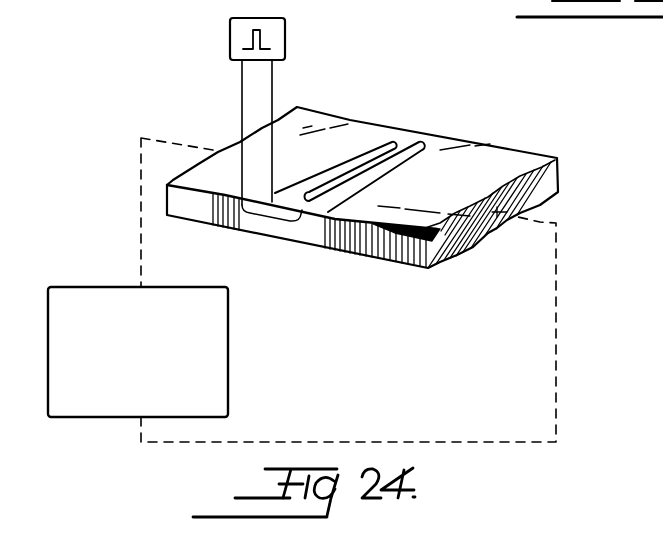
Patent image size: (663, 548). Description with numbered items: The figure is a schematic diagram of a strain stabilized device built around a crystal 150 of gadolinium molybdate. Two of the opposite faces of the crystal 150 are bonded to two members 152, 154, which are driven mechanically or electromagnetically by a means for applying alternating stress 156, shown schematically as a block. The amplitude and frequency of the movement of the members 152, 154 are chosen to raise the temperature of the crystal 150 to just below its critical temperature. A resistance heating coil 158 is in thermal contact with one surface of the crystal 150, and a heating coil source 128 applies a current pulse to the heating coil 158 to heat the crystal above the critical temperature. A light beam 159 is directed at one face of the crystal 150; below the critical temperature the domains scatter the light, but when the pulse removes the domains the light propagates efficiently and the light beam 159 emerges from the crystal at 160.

The heating coil source 128 is at (286, 38).
The crystal 150 is at (303, 233).
The member 152 is at (207, 213).
The member 154 is at (406, 256).
The means for applying alternating stress 156 is at (65, 418).
The resistance heating coil 158 is at (410, 140).
The light beam 159 is at (263, 230).
The emergence point of light beam 160 is at (430, 132).